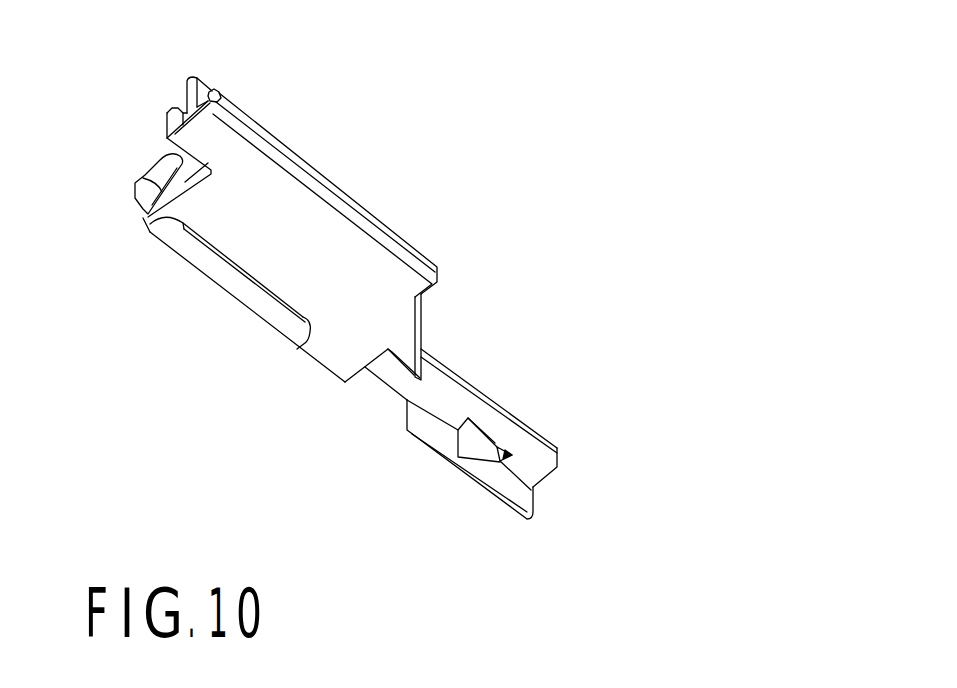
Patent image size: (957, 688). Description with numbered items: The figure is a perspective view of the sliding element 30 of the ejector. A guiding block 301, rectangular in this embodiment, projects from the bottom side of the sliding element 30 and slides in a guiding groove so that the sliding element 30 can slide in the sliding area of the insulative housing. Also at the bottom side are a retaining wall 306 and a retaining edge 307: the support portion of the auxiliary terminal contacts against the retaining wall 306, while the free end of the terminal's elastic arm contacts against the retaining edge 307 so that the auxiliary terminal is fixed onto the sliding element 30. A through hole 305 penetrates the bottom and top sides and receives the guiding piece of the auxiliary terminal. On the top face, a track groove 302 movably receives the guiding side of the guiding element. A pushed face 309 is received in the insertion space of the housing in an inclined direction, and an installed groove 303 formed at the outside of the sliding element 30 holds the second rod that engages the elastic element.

The sliding element 30 is at (600, 65).
The guiding block 301 is at (243, 295).
The track groove 302 is at (182, 97).
The installed groove 303 is at (157, 188).
The through hole 305 is at (483, 440).
The retaining wall 306 is at (512, 487).
The retaining edge 307 is at (435, 350).
The pushed face 309 is at (427, 312).